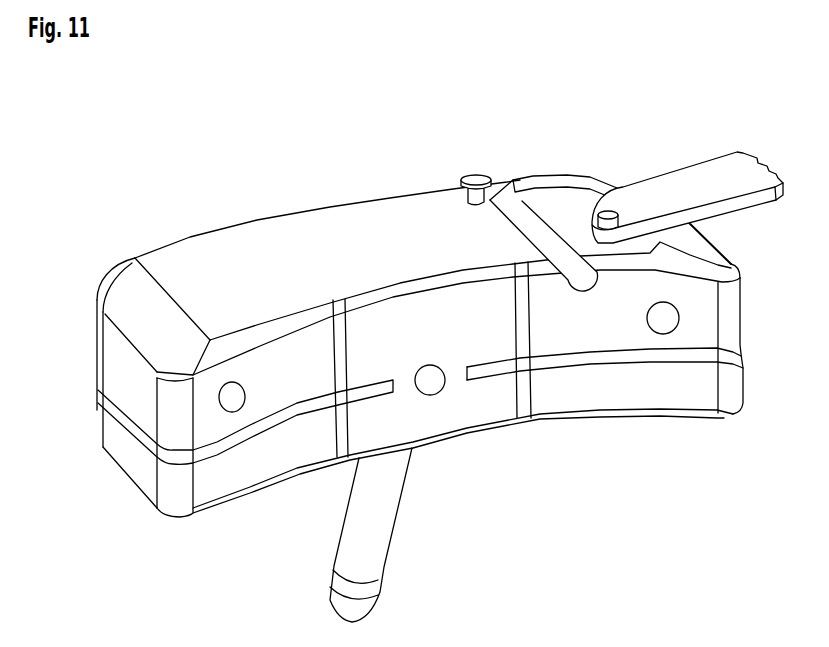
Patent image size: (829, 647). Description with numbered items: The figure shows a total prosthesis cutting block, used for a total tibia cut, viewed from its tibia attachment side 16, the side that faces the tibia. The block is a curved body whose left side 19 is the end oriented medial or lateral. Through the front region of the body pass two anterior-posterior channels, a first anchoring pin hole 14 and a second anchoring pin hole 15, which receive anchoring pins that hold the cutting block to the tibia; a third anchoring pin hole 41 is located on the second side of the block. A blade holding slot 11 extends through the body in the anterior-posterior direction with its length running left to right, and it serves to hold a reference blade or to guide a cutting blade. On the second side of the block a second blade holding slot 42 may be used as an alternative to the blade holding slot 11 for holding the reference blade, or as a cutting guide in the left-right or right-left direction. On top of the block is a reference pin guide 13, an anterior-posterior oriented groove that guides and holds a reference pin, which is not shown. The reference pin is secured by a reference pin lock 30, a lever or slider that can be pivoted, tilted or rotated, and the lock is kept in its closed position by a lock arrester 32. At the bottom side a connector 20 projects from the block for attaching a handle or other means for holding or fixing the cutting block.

The blade holding slot 11 is at (577, 358).
The reference pin guide 13 is at (528, 218).
The first anchoring pin hole 14 is at (431, 383).
The second anchoring pin hole 15 is at (663, 320).
The tibia attachment side 16 is at (412, 332).
The left side 19 is at (140, 392).
The connector 20 is at (403, 549).
The reference pin lock 30 is at (722, 180).
The lock arrester 32 is at (477, 177).
The third anchoring pin hole 41 is at (233, 400).
The second blade holding slot 42 is at (302, 412).